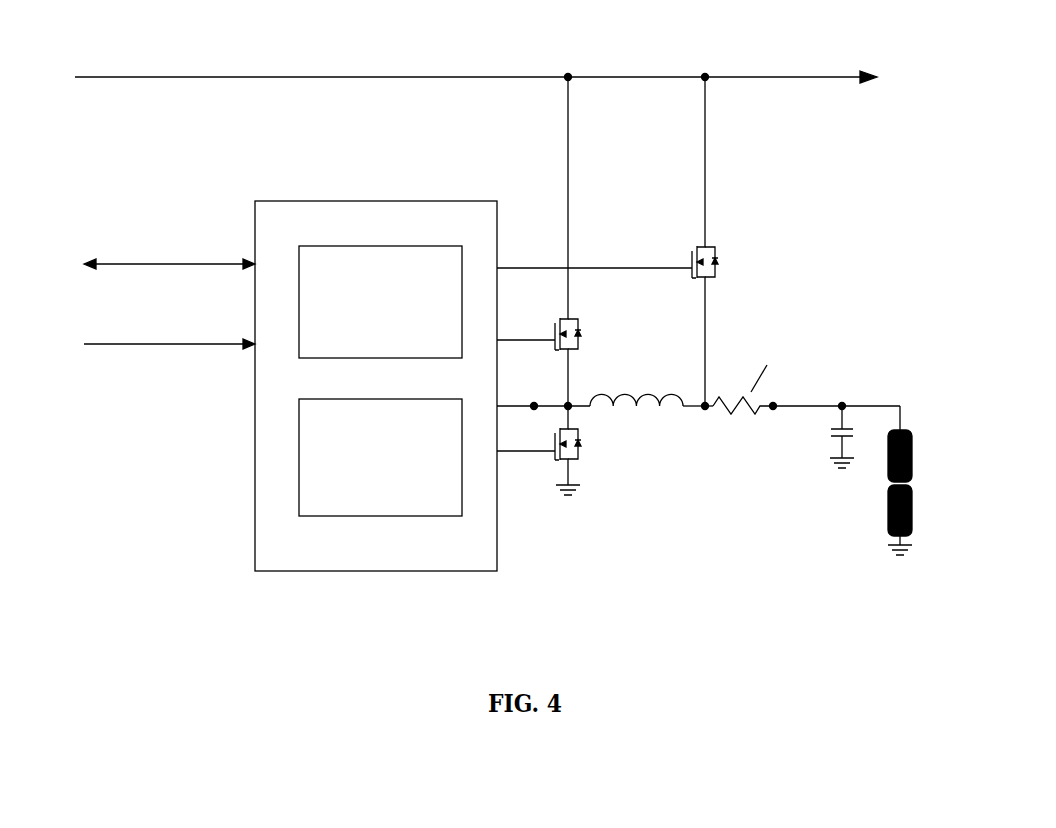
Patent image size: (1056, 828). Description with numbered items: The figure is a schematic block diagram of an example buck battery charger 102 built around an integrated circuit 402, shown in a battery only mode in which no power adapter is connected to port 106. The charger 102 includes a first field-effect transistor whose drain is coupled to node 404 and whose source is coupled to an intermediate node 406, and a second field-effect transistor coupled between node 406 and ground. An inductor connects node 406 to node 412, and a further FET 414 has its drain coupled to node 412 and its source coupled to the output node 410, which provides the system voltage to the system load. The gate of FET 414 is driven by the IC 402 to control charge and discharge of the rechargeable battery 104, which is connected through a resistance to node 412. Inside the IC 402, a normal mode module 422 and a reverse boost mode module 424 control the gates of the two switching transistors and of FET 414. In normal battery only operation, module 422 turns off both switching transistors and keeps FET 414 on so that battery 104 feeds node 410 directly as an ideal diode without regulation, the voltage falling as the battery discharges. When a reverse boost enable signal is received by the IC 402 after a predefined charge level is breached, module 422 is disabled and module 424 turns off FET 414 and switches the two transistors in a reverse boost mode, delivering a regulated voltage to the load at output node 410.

The charger 102 is at (372, 146).
The rechargeable battery 104 is at (924, 478).
The port 106 is at (152, 109).
The integrated circuit 402 is at (376, 386).
The node 404 is at (566, 70).
The intermediate node 406 is at (577, 394).
The output node 410 is at (701, 70).
The node 412 is at (716, 417).
The FET 414 is at (731, 275).
The normal mode module 422 is at (380, 302).
The reverse boost mode module 424 is at (380, 457).